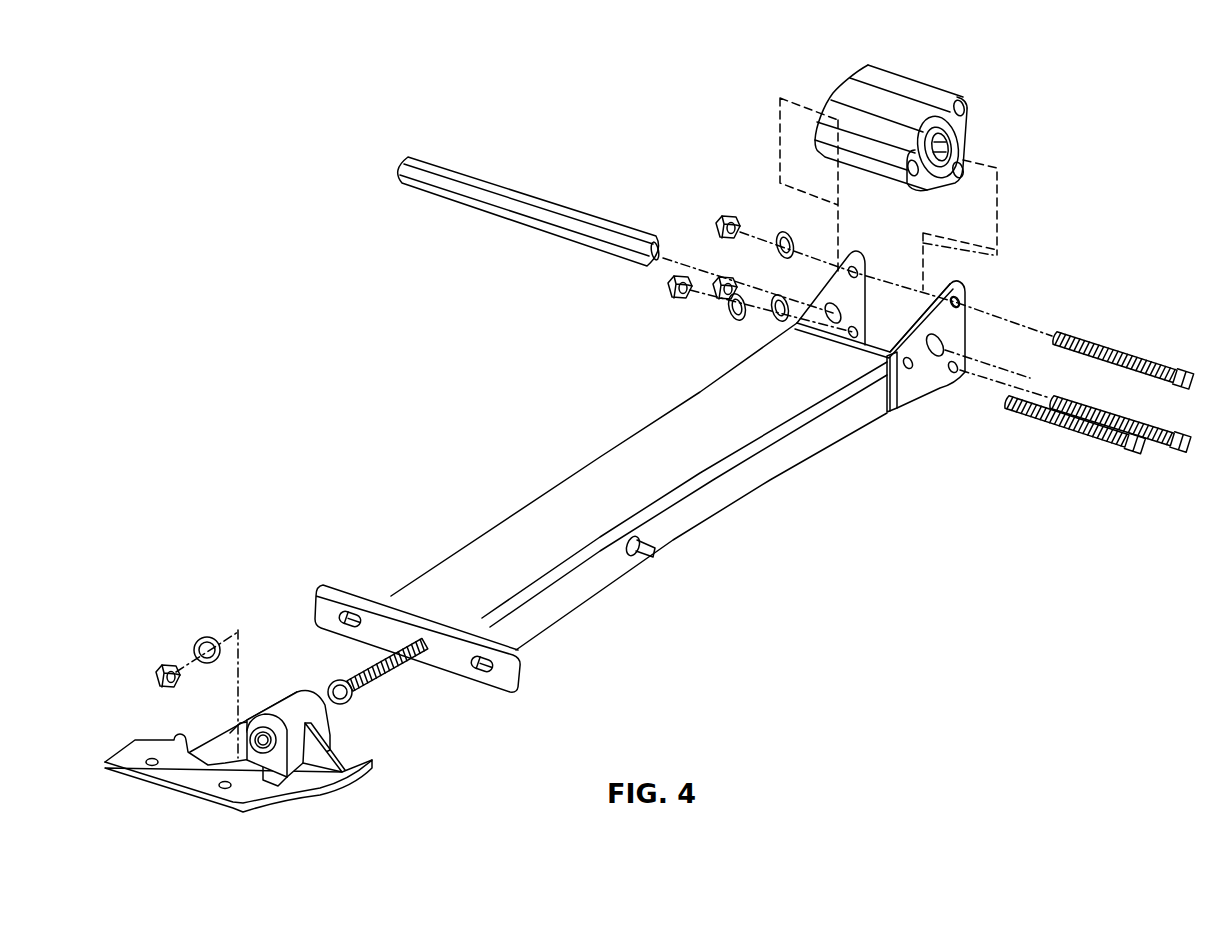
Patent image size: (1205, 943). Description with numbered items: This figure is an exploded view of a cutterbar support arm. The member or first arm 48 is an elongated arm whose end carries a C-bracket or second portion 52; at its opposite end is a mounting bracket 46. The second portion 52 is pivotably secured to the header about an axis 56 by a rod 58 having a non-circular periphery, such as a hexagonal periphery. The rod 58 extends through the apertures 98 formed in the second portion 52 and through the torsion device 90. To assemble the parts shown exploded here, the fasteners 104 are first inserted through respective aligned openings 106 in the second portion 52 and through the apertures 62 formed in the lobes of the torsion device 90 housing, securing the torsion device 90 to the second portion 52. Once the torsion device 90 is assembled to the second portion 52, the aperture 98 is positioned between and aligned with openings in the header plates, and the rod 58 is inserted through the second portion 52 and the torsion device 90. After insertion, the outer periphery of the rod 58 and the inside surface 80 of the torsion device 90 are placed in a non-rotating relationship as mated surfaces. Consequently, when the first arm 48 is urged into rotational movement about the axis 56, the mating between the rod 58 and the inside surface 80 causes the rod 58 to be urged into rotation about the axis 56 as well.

The mounting bracket plate 46 is at (343, 783).
The first arm 48 is at (752, 490).
The second portion 52 is at (928, 324).
The axis 56 is at (992, 365).
The rod 58 is at (570, 208).
The apertures 62 is at (965, 108).
The inside surface 80 is at (950, 148).
The torsion device 90 is at (903, 155).
The apertures 98 is at (853, 300).
The fasteners 104 is at (1127, 350).
The openings 106 is at (967, 300).